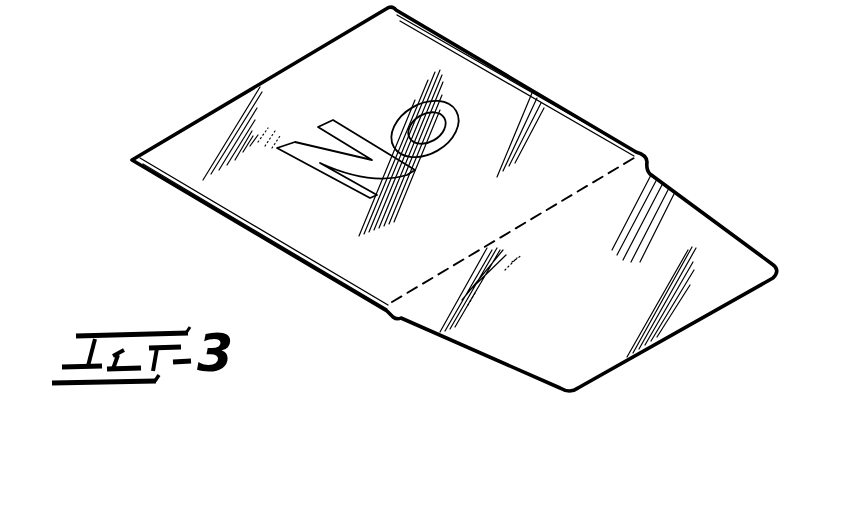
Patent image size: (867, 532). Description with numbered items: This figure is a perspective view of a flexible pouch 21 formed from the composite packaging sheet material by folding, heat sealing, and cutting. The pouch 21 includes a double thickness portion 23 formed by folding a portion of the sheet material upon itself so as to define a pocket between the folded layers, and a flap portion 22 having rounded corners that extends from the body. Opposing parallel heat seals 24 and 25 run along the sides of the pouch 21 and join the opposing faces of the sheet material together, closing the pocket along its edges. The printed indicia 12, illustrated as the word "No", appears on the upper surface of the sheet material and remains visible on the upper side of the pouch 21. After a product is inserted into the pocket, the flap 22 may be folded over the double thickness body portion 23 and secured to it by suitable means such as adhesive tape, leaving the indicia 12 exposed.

The printed indicia 12 is at (340, 131).
The flexible pouch 21 is at (566, 94).
The flap portion 22 is at (683, 221).
The double thickness portion 23 is at (590, 124).
The heat seal 24 is at (230, 218).
The heat seal 25 is at (463, 50).